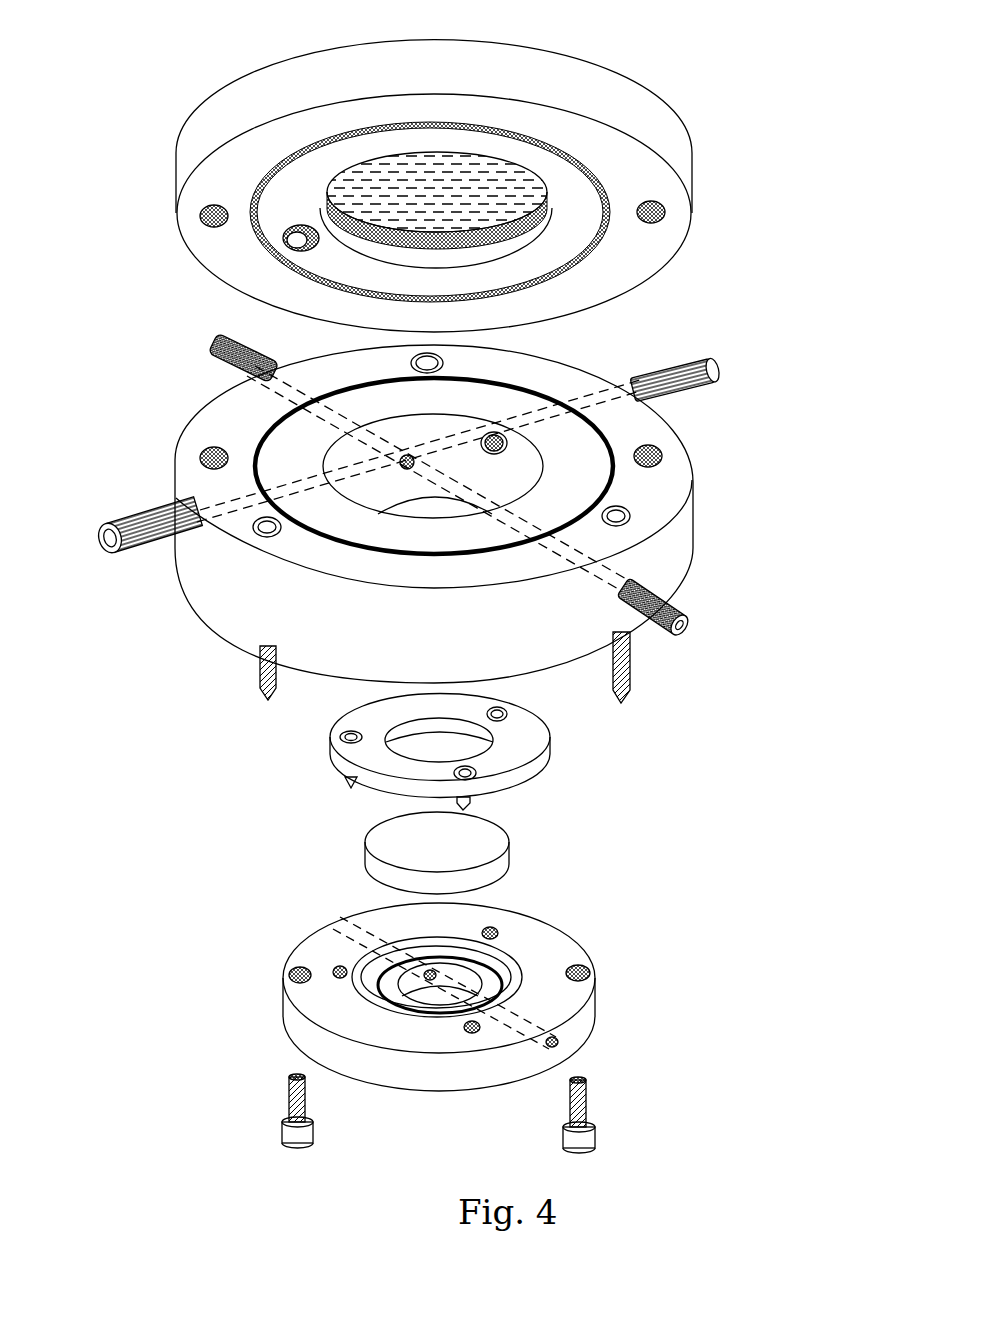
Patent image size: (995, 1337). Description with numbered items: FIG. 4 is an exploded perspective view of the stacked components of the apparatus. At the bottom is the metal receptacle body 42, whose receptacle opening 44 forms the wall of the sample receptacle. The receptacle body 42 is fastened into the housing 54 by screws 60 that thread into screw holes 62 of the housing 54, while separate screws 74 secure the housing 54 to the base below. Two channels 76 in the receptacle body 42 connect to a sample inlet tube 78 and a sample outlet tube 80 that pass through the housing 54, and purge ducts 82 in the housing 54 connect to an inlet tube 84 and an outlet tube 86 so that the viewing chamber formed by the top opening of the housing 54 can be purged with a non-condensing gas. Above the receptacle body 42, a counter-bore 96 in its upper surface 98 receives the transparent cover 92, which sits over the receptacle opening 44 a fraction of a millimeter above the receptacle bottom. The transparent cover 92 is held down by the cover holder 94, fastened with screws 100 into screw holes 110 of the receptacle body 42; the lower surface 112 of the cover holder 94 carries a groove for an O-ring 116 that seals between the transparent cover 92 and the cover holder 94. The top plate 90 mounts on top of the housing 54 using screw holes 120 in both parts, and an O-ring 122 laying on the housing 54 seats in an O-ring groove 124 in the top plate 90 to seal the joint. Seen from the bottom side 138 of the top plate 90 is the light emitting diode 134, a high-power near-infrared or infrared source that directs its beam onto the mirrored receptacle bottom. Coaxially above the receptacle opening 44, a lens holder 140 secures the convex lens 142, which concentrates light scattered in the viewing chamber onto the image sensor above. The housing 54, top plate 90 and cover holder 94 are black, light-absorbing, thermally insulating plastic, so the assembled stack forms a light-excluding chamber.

The receptacle body 42 is at (597, 1006).
The receptacle opening 44 is at (483, 995).
The housing 54 is at (695, 527).
The screws 60 is at (572, 1103).
The screw holes 62 is at (291, 975).
The screws 74 is at (262, 537).
The channels 76 is at (360, 930).
The sample inlet tube 78 is at (214, 343).
The sample outlet tube 80 is at (691, 633).
The purge ducts 82 is at (232, 500).
The inlet tube 84 is at (126, 518).
The outlet tube 86 is at (718, 372).
The top plate 90 is at (477, 186).
The transparent cover 92 is at (510, 852).
The cover holder 94 is at (551, 750).
The counter-bore 96 is at (491, 953).
The upper surface 98 is at (549, 944).
The screws 100 is at (342, 738).
The screw holes 110 is at (340, 968).
The lower surface 112 is at (507, 789).
The O-ring 116 is at (428, 980).
The screw holes 120 is at (666, 213).
The O-ring 122 is at (277, 422).
The O-ring groove 124 is at (258, 160).
The light emitting diode 134 is at (282, 244).
The bottom side 138 is at (557, 133).
The lens holder 140 is at (497, 252).
The lens 142 is at (405, 192).